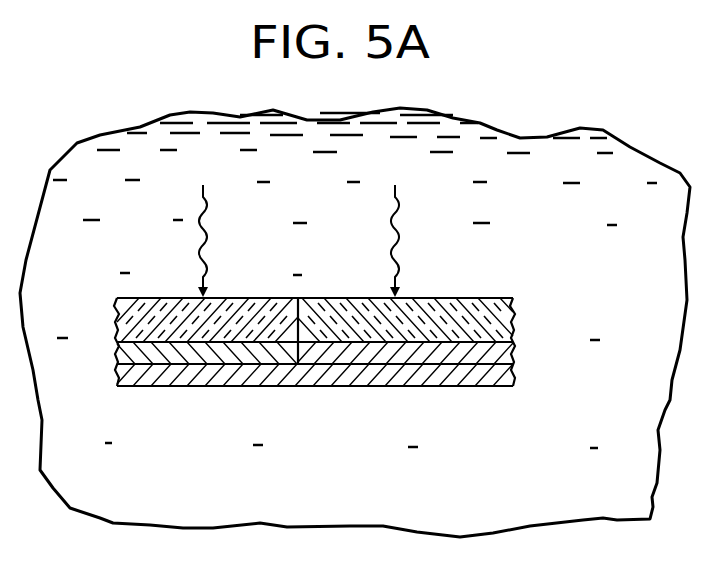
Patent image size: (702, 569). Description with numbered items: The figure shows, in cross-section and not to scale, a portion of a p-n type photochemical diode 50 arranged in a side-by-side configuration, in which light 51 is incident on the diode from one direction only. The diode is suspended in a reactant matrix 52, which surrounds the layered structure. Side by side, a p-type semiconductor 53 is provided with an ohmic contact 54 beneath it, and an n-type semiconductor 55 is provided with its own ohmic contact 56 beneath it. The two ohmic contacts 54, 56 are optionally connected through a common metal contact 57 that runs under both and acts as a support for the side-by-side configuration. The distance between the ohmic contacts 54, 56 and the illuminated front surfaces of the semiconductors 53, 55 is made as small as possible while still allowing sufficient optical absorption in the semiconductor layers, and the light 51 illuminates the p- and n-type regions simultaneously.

The diode 50 is at (281, 289).
The light 51 is at (197, 242).
The reactant matrix 52 is at (550, 256).
The p-type semiconductor 53 is at (132, 319).
The ohmic contact 54 is at (132, 348).
The n-type semiconductor 55 is at (502, 323).
The ohmic contact 56 is at (500, 353).
The metal contact 57 is at (332, 377).